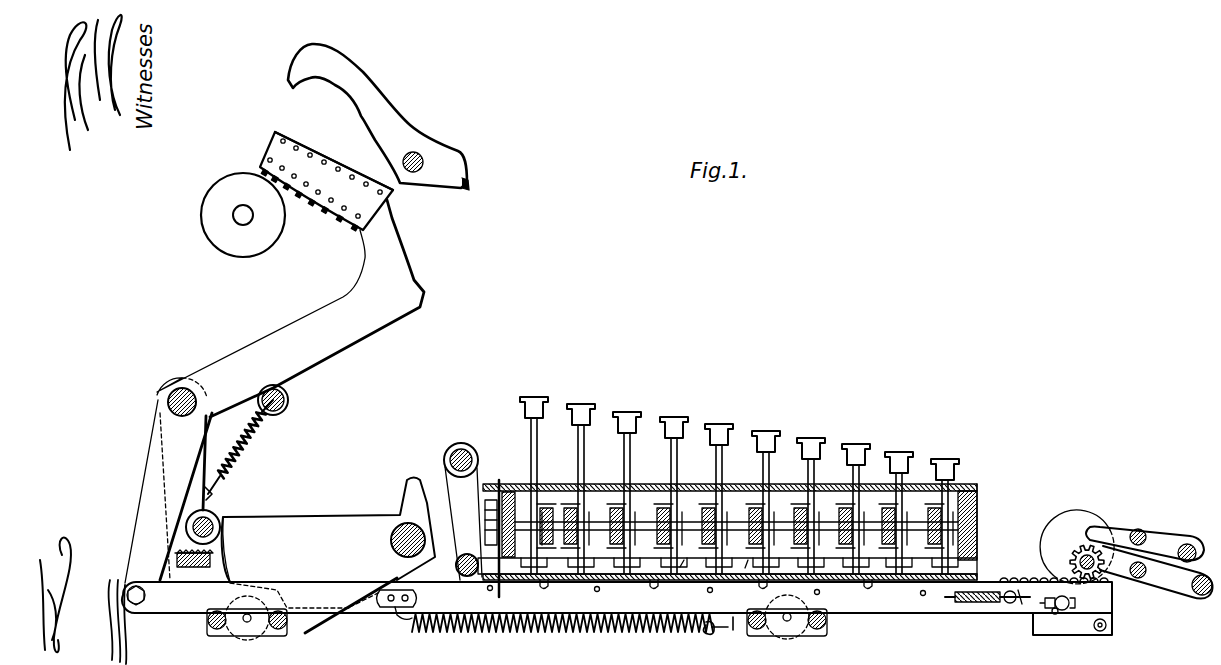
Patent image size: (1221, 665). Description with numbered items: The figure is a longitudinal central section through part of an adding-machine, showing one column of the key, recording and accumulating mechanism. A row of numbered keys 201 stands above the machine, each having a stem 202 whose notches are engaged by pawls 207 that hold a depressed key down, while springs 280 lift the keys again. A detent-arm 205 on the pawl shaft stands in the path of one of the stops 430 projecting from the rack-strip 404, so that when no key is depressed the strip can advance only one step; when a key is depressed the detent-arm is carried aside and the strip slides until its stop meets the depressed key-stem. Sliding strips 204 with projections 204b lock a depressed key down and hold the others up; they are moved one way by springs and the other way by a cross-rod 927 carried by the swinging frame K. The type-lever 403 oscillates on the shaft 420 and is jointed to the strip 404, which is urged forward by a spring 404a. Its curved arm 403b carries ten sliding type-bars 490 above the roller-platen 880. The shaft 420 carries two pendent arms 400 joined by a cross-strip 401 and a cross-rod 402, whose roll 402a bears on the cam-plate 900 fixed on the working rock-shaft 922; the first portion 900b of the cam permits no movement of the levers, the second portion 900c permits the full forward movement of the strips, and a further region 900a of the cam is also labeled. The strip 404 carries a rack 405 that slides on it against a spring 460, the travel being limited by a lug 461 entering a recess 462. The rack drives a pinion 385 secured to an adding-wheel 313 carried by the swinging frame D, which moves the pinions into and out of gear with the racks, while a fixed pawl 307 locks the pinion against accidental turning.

The numbered key 201 is at (588, 410).
The stem 202 is at (537, 500).
The sliding strip 204 is at (747, 570).
The projection 204b is at (682, 568).
The detent-arm 205 is at (502, 488).
The pawl 207 is at (730, 508).
The spring 280 is at (660, 505).
The fixed pawl 307 is at (1155, 530).
The adding-wheel 313 is at (1075, 528).
The pinion 385 is at (1075, 550).
The pendent arm 400 is at (248, 439).
The cross-strip 401 is at (190, 567).
The cross-rod 402 is at (192, 531).
The roll 402a is at (222, 495).
The type-lever 403 is at (118, 500).
The curved arm 403b is at (273, 138).
The strip 404 is at (915, 600).
The spring 404a is at (545, 625).
The rack 405 is at (1030, 580).
The type-lever shaft 420 is at (166, 402).
The stop 430 is at (602, 590).
The spring 460 is at (1000, 603).
The lug 461 is at (1056, 614).
The recess 462 is at (1050, 612).
The sliding type-bar 490 is at (333, 212).
The roller-platen 880 is at (208, 218).
The cam-plate 900 is at (328, 530).
The plate arm 900a is at (305, 633).
The first portion of cam 900b is at (253, 549).
The second portion of cam 900c is at (283, 595).
The working rock-shaft 922 is at (398, 530).
The cross-rod 927 is at (449, 570).
The swinging frame K is at (445, 476).
The swinging frame D is at (1192, 590).